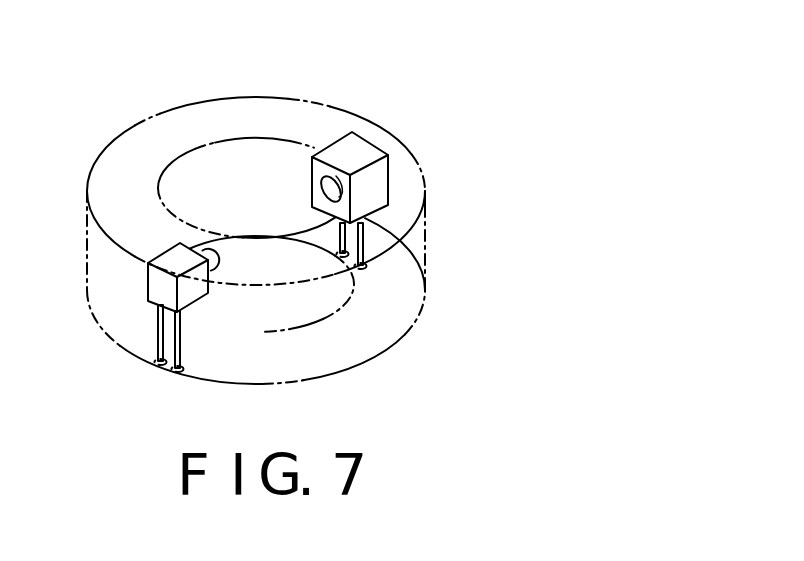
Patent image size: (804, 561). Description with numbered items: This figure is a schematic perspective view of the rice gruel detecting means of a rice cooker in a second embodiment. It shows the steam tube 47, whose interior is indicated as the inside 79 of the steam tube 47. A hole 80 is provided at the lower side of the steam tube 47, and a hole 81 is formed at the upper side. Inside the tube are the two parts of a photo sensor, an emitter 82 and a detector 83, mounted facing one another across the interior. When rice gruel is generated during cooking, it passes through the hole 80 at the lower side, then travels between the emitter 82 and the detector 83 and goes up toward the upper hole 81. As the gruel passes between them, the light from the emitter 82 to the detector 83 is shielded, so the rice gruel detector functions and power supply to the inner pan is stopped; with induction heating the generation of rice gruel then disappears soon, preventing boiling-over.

The steam tube 47 is at (280, 98).
The inside of the steam tube 79 is at (428, 278).
The hole 80 is at (318, 322).
The hole 81 is at (218, 155).
The emitter 82 is at (180, 292).
The detector 83 is at (378, 182).